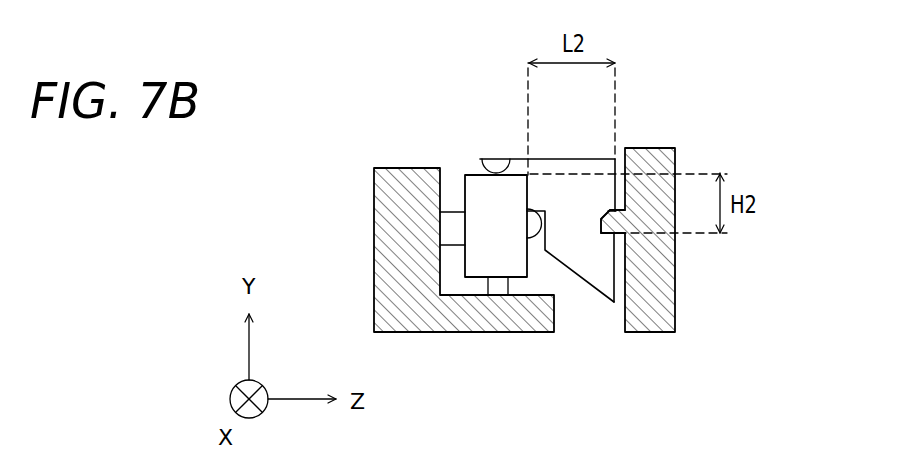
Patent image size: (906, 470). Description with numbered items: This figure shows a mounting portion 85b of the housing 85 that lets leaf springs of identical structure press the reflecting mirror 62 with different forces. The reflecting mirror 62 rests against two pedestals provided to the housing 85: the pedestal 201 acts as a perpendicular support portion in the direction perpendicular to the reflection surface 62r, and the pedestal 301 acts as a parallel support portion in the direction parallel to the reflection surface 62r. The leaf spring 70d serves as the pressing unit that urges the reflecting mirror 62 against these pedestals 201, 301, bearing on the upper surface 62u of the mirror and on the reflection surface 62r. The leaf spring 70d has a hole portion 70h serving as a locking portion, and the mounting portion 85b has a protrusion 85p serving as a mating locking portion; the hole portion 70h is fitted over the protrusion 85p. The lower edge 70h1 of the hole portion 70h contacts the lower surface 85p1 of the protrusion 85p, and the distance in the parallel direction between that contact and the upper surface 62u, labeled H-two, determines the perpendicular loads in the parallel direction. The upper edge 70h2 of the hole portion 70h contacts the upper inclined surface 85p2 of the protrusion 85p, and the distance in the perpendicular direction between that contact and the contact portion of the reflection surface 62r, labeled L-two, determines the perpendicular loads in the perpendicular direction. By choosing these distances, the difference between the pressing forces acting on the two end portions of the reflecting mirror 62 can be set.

The housing 85 is at (414, 333).
The mounting portion 85b is at (645, 318).
The protrusion 85p is at (598, 224).
The lower surface of the protrusion 85p1 is at (626, 235).
The upper inclined surface of the protrusion 85p2 is at (620, 212).
The reflecting mirror 62 is at (457, 216).
The upper surface of the reflecting mirror 62u is at (472, 172).
The reflection surface 62r is at (528, 262).
The pedestal 201 is at (470, 207).
The pedestal 301 is at (497, 281).
The leaf spring 70d is at (568, 158).
The hole portion 70h is at (607, 207).
The lower edge of the hole portion 70h1 is at (614, 236).
The upper edge of the hole portion 70h2 is at (630, 214).